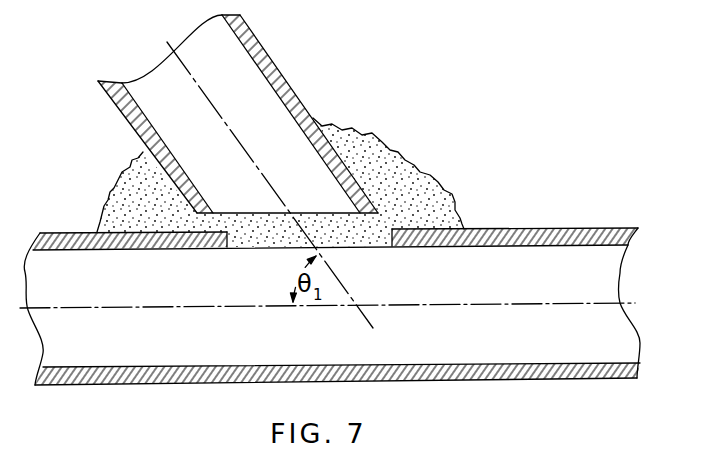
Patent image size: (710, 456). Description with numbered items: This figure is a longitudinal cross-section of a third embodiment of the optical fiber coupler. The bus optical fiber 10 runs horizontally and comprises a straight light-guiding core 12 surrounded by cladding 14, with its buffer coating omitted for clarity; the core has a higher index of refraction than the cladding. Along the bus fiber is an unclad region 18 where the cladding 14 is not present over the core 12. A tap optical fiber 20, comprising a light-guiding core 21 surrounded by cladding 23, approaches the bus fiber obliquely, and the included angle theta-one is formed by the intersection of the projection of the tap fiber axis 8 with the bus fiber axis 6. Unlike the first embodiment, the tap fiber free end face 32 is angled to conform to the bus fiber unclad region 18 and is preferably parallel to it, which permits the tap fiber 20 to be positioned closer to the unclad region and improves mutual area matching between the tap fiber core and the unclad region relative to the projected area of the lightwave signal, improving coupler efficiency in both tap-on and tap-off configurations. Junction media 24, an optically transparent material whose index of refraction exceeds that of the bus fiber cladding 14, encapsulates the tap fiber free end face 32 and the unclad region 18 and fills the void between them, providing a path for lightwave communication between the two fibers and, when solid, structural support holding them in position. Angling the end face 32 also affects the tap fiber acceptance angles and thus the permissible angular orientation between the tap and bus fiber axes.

The bus fiber longitudinal axis 6 is at (178, 308).
The tap fiber longitudinal axis 8 is at (243, 152).
The bus optical fiber 10 is at (568, 212).
The core 12 is at (494, 339).
The cladding 14 is at (587, 236).
The unclad region 18 is at (262, 248).
The tap optical fiber 20 is at (240, 114).
The core 21 is at (254, 109).
The cladding 23 is at (128, 115).
The junction media 24 is at (397, 163).
The tap fiber free end face 32 is at (345, 214).